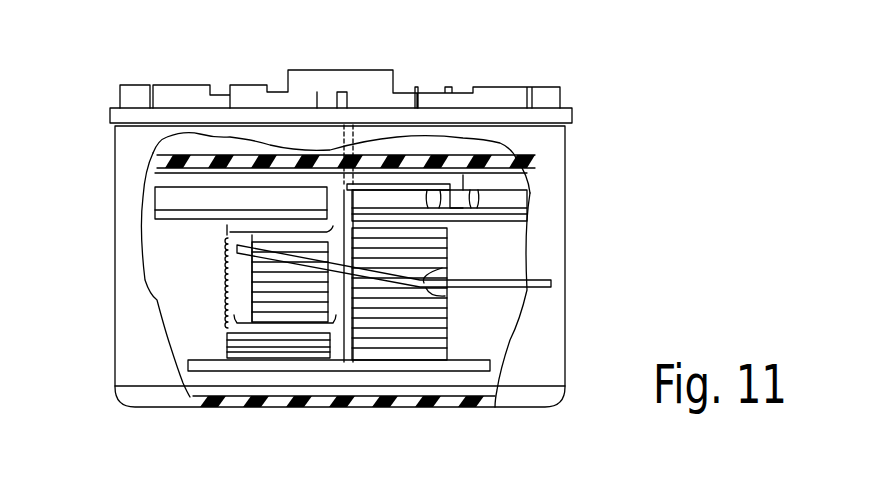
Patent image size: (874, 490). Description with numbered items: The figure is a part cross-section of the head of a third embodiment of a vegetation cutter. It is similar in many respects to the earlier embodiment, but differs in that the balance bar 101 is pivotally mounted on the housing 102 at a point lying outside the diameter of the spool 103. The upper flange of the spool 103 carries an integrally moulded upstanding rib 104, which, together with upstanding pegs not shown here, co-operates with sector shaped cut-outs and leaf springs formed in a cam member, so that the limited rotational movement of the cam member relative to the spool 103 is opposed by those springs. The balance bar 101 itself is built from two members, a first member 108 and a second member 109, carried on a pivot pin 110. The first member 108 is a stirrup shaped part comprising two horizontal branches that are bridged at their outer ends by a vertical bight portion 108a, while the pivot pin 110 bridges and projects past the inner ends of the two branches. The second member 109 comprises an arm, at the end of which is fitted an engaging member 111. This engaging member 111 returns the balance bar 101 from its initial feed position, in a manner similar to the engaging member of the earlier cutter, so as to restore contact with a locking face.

The balance bar 101 is at (200, 271).
The housing 102 is at (552, 203).
The spool 103 is at (478, 365).
The upstanding rib 104 is at (513, 198).
The first member 108 is at (277, 233).
The bight portion 108a is at (237, 309).
The second member 109 is at (397, 182).
The pivot pin 110 is at (339, 352).
The engaging member 111 is at (457, 207).